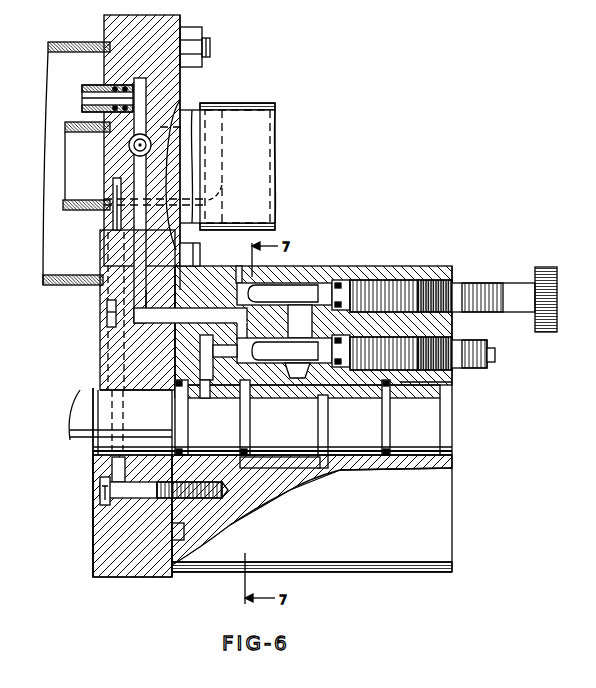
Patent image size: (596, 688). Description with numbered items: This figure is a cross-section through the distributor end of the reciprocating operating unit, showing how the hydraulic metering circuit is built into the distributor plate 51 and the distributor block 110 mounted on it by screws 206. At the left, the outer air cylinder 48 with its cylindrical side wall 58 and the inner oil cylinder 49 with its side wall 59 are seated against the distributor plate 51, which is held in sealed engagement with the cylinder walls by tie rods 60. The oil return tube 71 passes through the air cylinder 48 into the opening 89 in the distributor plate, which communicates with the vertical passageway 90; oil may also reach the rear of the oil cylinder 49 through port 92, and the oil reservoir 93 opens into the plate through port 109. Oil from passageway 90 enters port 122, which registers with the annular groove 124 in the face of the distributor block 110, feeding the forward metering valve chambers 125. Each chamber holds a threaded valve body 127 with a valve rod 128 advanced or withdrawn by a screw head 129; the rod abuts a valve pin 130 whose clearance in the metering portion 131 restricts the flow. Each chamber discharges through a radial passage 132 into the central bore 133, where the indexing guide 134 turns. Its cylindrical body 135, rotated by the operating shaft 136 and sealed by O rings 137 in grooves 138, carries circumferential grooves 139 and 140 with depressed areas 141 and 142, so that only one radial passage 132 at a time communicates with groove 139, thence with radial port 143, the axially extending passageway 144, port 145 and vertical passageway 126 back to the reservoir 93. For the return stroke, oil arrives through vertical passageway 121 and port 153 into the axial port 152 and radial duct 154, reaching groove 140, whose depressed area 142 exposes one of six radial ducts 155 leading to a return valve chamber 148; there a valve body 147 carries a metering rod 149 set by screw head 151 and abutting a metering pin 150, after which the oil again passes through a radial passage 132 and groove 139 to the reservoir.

The air cylinder 48 is at (58, 65).
The oil cylinder 49 is at (72, 147).
The distributor plate 51 is at (118, 578).
The cylindrical side wall 58 is at (60, 42).
The cylindrical side wall 59 is at (65, 127).
The tie rods 60 is at (210, 45).
The oil return tube 71 is at (88, 97).
The opening 89 is at (105, 80).
The vertical passageway 90 is at (181, 78).
The port 92 is at (104, 184).
The oil reservoir 93 is at (262, 144).
The port 109 is at (218, 184).
The distributor block 110 is at (421, 545).
The vertical passageway 121 is at (100, 308).
The port 122 is at (148, 300).
The annular groove 124 is at (196, 264).
The forward movement metering valve chambers 125 is at (239, 266).
The vertical passageway 126 is at (422, 278).
The valve bodies 127 is at (455, 280).
The valve rod 128 is at (361, 290).
The screw head 129 is at (548, 268).
The valve pin 130 is at (282, 293).
The metering portion 131 is at (250, 283).
The radial passage 132 is at (314, 336).
The central bore 133 is at (452, 383).
The indexing guide 134 is at (440, 433).
The cylindrical body 135 is at (350, 465).
The operating shaft 136 is at (157, 414).
The O rings 137 is at (184, 442).
The grooves 138 is at (392, 472).
The circumferential groove 139 is at (326, 430).
The circumferential groove 140 is at (250, 437).
The depressed area 141 is at (305, 380).
The depressed area 142 is at (230, 386).
The radial port 143 is at (360, 437).
The axially extending passageway 144 is at (283, 470).
The port 145 is at (143, 478).
The valve bodies 147 is at (455, 337).
The valve chamber 148 is at (237, 345).
The metering rod 149 is at (402, 380).
The metering pin 150 is at (281, 359).
The screw head 151 is at (496, 357).
The axial port 152 is at (182, 318).
The port 153 is at (131, 336).
The radial duct 154 is at (269, 321).
The radial ducts 155 is at (207, 383).
The screws 206 is at (100, 518).